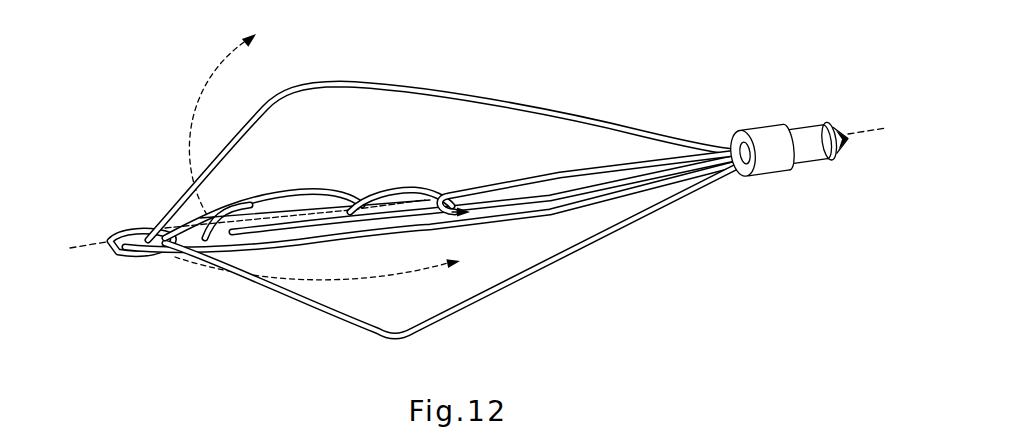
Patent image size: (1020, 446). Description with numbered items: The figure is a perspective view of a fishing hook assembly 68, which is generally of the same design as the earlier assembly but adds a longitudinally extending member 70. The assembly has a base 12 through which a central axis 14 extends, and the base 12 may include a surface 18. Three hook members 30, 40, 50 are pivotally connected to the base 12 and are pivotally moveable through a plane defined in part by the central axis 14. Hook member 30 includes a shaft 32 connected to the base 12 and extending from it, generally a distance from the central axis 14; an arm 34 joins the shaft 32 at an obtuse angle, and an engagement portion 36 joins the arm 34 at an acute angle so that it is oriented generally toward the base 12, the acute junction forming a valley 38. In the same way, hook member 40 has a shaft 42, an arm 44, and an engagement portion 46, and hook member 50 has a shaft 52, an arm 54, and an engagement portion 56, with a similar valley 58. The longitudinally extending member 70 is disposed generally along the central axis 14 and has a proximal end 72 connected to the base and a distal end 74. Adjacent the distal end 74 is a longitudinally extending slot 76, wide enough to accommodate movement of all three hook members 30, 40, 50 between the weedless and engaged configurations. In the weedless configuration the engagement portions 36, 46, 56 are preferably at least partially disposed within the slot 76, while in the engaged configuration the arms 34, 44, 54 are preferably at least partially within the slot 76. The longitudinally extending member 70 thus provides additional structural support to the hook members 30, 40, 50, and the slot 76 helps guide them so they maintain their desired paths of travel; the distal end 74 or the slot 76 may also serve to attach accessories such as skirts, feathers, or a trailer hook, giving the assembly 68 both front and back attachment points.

The base 12 is at (760, 133).
The central axis 14 is at (850, 130).
The surface 18 is at (803, 140).
The hook member 30 is at (549, 82).
The shaft 32 is at (442, 144).
The arm 34 is at (275, 99).
The engagement portion 36 is at (280, 246).
The valley 38 is at (123, 247).
The hook member 40 is at (546, 229).
The shaft 42 is at (603, 193).
The arm 44 is at (430, 220).
The engagement portion 46 is at (303, 195).
The hook member 50 is at (450, 269).
The shaft 52 is at (450, 264).
The arm 54 is at (340, 325).
The engagement portion 56 is at (263, 189).
The valley 58 is at (227, 220).
The fishing hook assembly 68 is at (633, 69).
The longitudinally extending member 70 is at (500, 180).
The proximal end 72 is at (588, 158).
The distal end 74 is at (111, 244).
The longitudinally extending slot 76 is at (387, 205).